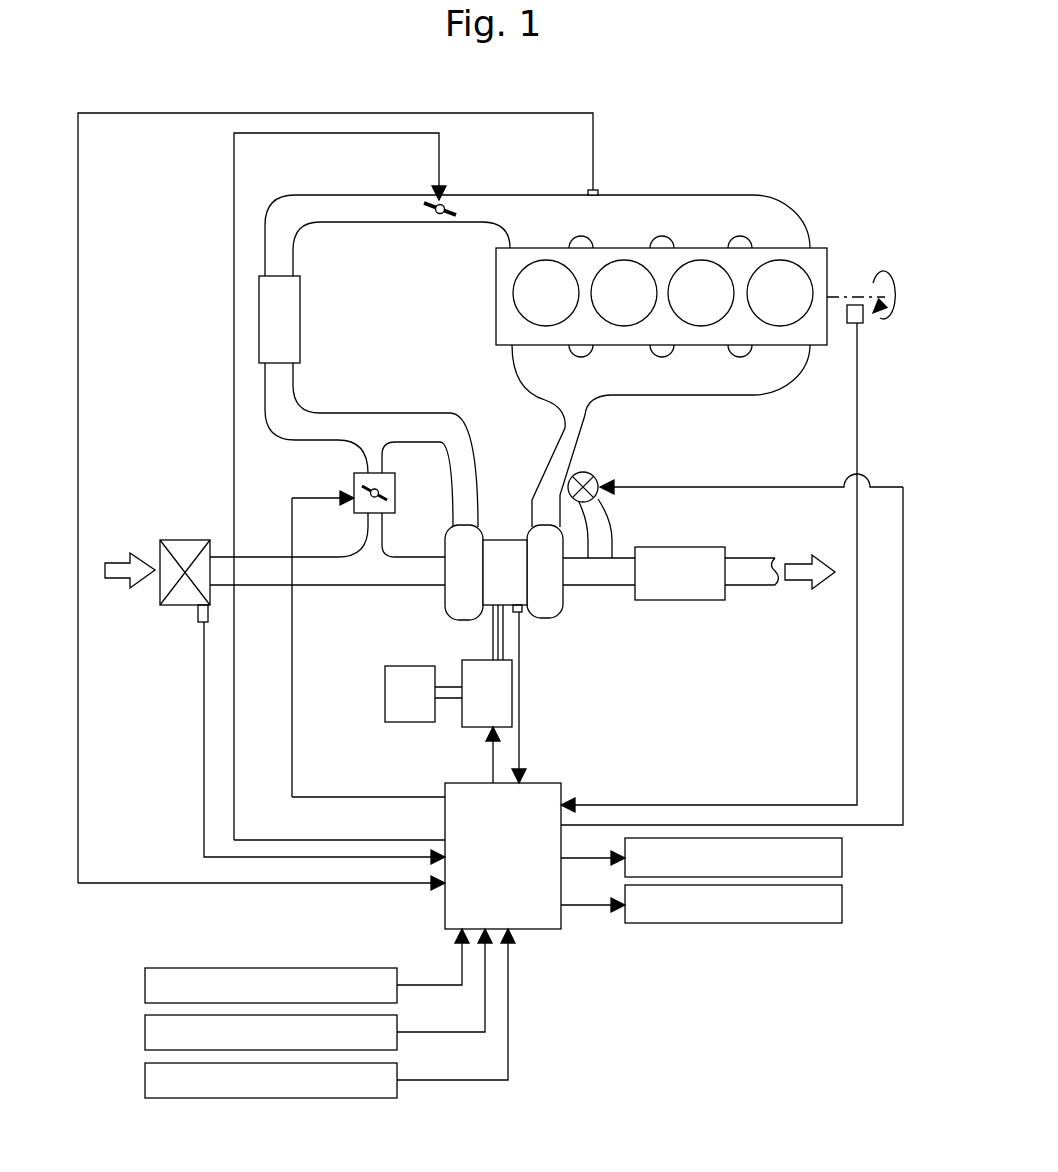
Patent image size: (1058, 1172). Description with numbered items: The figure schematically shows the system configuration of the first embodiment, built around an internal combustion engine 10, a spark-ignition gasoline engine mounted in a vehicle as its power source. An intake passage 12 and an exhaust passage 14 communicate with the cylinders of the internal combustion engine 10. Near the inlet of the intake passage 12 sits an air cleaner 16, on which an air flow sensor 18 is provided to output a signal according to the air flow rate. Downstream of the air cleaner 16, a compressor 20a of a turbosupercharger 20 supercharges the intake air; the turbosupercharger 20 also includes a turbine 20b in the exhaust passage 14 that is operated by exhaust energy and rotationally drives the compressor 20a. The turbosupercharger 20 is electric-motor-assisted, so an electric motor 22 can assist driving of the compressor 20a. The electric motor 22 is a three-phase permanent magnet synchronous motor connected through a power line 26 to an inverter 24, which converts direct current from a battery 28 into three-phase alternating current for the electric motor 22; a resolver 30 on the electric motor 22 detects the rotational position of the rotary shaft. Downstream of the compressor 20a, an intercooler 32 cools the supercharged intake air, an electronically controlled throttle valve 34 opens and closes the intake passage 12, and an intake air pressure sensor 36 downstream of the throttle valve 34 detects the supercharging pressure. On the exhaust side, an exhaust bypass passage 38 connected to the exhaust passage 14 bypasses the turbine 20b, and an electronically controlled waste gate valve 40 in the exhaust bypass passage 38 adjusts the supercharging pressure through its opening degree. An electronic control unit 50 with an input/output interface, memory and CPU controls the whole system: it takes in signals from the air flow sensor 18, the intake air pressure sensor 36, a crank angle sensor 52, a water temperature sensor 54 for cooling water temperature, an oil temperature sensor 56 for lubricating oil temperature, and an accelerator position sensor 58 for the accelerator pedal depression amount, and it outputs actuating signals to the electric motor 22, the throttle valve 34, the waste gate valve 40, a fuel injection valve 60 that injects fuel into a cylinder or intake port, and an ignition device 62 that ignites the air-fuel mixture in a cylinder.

The internal combustion engine 10 is at (830, 223).
The intake passage 12 is at (332, 428).
The exhaust passage 14 is at (548, 420).
The air cleaner 16 is at (180, 595).
The air flow sensor 18 is at (200, 625).
The turbosupercharger 20 is at (489, 570).
The compressor 20a is at (445, 600).
The turbine 20b is at (555, 612).
The electric motor 22 is at (510, 553).
The inverter 24 is at (462, 720).
The power line 26 is at (493, 640).
The battery 28 is at (385, 700).
The resolver 30 is at (519, 615).
The intercooler 32 is at (287, 320).
The throttle valve 34 is at (452, 205).
The intake air pressure sensor 36 is at (598, 192).
The exhaust bypass passage 38 is at (598, 512).
The waste gate valve 40 is at (600, 478).
The electronic control unit 50 is at (562, 785).
The crank angle sensor 52 is at (857, 324).
The water temperature sensor 54 is at (145, 985).
The oil temperature sensor 56 is at (145, 1032).
The accelerator position sensor 58 is at (145, 1080).
The fuel injection valve 60 is at (845, 858).
The ignition device 62 is at (845, 905).